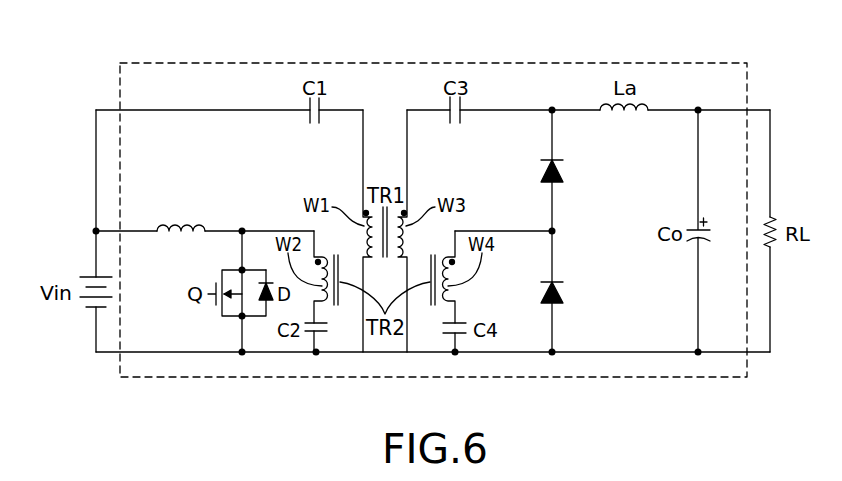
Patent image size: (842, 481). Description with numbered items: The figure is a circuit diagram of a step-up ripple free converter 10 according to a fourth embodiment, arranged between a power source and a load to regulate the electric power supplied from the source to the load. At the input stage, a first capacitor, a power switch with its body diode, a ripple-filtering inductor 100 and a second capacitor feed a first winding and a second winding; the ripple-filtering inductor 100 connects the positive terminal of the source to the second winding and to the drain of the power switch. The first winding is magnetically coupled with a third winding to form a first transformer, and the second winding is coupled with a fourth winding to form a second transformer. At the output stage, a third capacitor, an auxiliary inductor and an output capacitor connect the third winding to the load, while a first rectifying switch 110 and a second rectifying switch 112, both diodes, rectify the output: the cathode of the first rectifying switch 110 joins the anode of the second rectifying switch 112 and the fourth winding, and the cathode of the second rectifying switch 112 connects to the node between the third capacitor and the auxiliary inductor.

The step-up ripple free converter 10 is at (424, 62).
The ripple-filtering inductor 100 is at (180, 222).
The first rectifying switch 110 is at (564, 288).
The second rectifying switch 112 is at (564, 168).